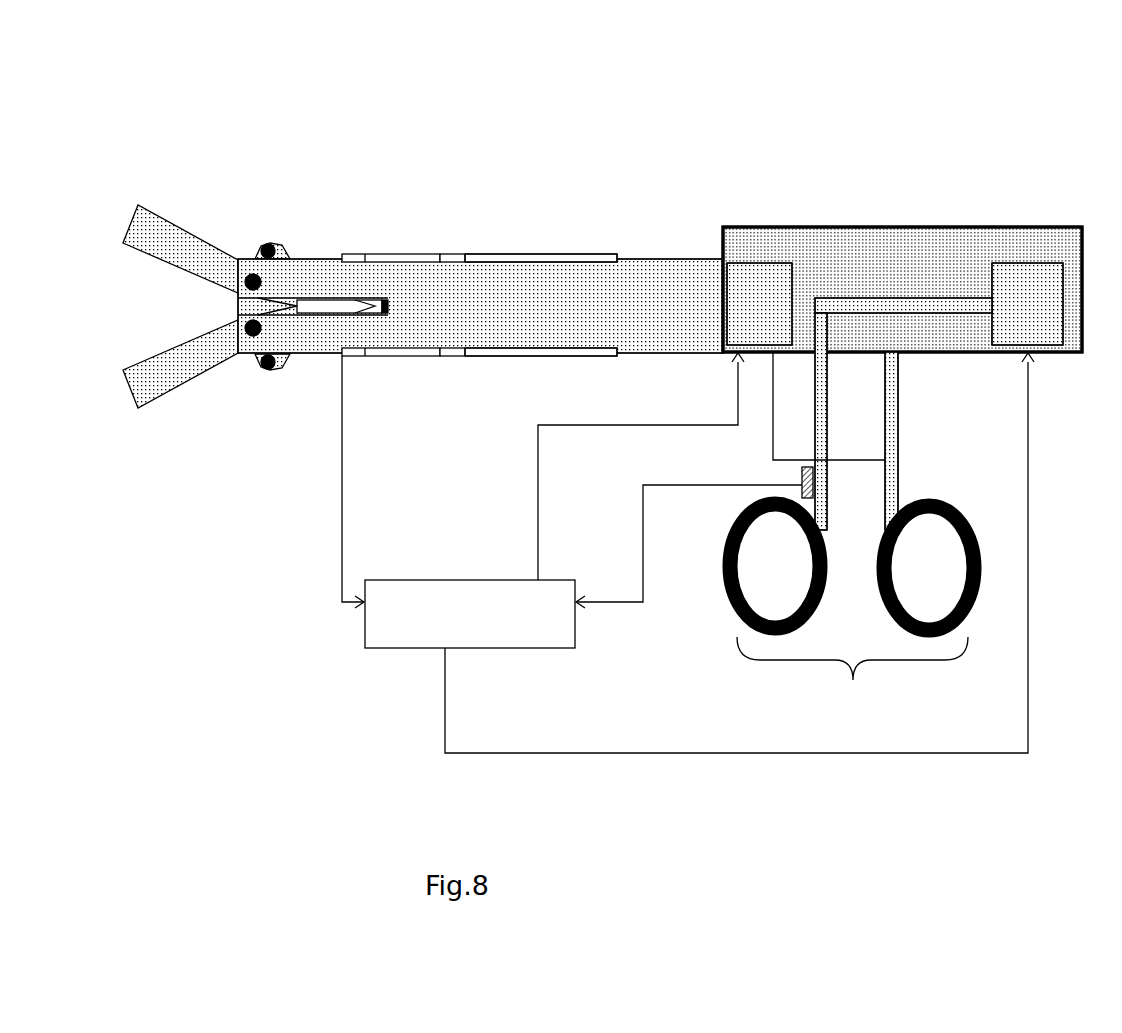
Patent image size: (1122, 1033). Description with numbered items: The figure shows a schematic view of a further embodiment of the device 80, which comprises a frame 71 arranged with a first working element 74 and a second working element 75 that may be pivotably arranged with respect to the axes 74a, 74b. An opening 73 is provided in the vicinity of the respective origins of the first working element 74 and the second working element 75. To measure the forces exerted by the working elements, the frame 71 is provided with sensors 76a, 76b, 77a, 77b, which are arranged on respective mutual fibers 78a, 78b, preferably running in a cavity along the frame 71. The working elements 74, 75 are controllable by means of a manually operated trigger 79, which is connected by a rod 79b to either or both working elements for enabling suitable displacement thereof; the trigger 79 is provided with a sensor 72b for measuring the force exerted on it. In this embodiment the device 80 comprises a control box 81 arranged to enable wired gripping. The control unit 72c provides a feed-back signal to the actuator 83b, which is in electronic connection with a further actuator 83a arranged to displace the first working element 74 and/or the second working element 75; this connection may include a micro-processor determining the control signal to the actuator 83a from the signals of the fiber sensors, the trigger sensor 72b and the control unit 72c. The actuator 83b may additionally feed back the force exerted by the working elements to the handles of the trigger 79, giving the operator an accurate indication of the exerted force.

The device 80 is at (595, 381).
The frame 71 is at (530, 277).
The opening 73 is at (318, 297).
The first working element 74 is at (133, 228).
The second working element 75 is at (132, 395).
The axis 74a is at (247, 270).
The axis 74b is at (256, 336).
The sensor 76a is at (352, 252).
The sensor 76b is at (458, 252).
The sensor 77a is at (353, 357).
The sensor 77b is at (458, 357).
The fiber 78a is at (610, 252).
The fiber 78b is at (610, 357).
The control box 81 is at (855, 227).
The further actuator 83a is at (758, 263).
The actuator 83b is at (1030, 263).
The trigger 79 is at (817, 660).
The rod 79b is at (818, 403).
The sensor 72b is at (802, 472).
The control unit 72c is at (425, 578).